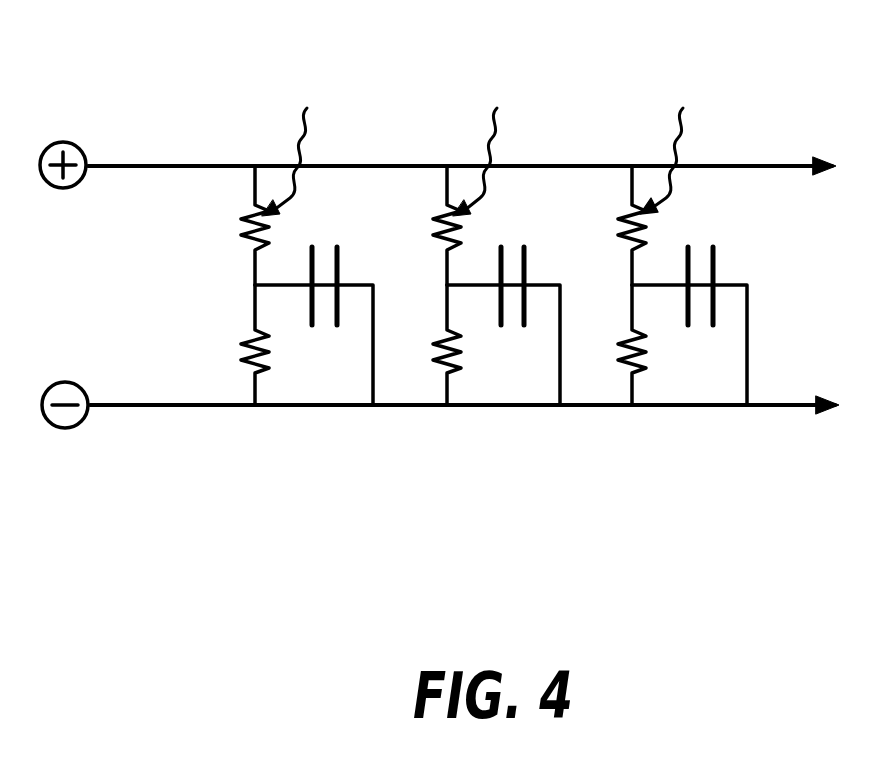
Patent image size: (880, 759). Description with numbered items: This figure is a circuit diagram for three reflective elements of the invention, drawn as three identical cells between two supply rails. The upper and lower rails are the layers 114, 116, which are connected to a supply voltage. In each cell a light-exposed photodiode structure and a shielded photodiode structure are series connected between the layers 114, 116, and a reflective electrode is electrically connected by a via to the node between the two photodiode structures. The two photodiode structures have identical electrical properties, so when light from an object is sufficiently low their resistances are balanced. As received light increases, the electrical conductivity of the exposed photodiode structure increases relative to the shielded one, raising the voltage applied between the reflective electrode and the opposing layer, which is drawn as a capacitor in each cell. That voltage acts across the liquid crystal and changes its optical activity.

The layer 114 is at (130, 164).
The layer 116 is at (155, 407).